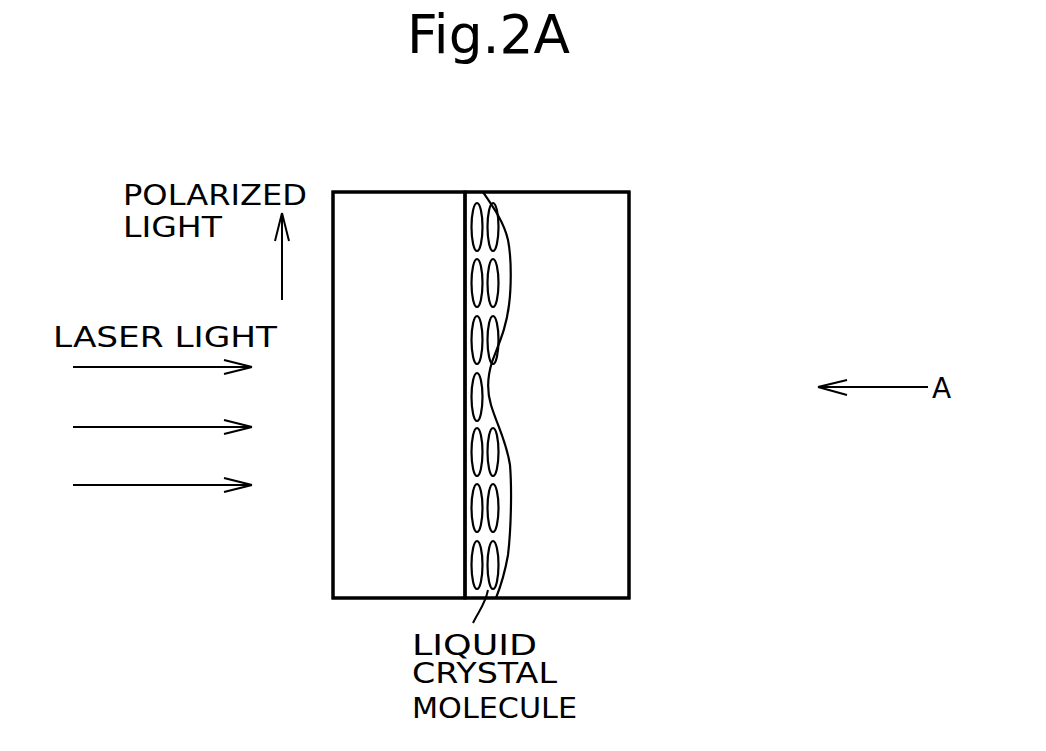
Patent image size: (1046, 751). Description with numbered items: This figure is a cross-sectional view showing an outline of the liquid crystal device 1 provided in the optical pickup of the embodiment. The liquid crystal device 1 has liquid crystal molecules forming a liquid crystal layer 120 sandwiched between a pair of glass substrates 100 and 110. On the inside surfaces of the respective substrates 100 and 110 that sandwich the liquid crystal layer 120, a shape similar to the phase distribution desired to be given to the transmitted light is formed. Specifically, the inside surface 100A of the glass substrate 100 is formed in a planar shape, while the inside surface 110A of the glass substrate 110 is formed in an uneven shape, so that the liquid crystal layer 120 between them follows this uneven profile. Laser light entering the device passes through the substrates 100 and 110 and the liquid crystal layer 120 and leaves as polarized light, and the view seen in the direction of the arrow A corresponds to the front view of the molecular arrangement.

The liquid crystal device 1 is at (508, 192).
The glass substrate 100 is at (348, 230).
The glass substrate 110 is at (612, 228).
The inside surface 100A is at (467, 500).
The inside surface 110A is at (517, 498).
The liquid crystal layer 120 is at (508, 558).